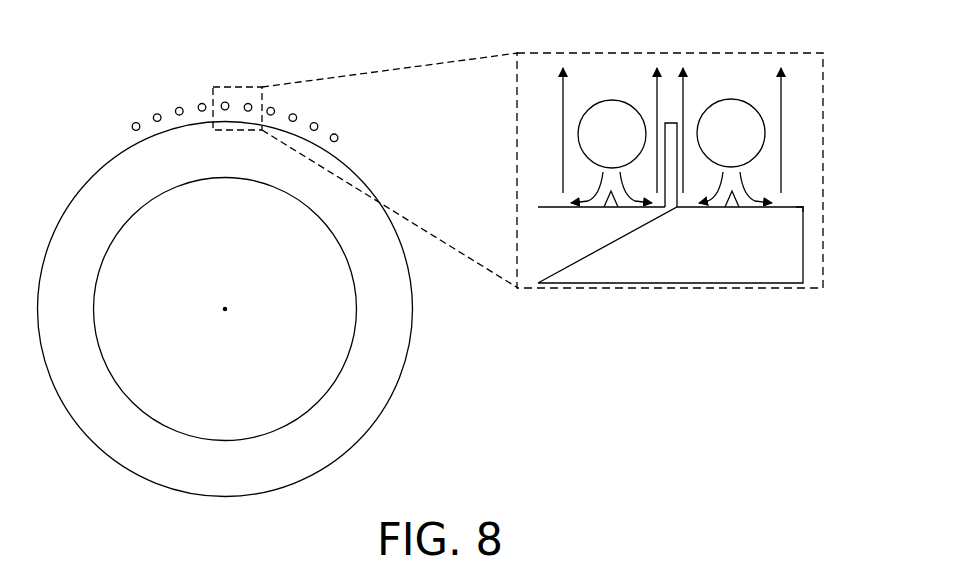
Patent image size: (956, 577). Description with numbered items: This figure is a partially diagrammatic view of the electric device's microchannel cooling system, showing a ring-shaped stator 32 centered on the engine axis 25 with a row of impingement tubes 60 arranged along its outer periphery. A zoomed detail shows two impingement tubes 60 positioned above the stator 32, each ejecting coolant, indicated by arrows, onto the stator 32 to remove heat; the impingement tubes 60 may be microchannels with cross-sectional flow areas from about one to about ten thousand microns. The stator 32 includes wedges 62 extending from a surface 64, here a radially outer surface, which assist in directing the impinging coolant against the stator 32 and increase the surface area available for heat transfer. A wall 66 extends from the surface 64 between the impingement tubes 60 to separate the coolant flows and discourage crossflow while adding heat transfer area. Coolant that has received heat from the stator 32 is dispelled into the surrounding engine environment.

The axis 25 is at (225, 309).
The stator 32 is at (398, 318).
The impingement tubes 60 is at (317, 125).
The wedges 62 is at (609, 208).
The surface 64 is at (796, 206).
The wall 66 is at (671, 122).